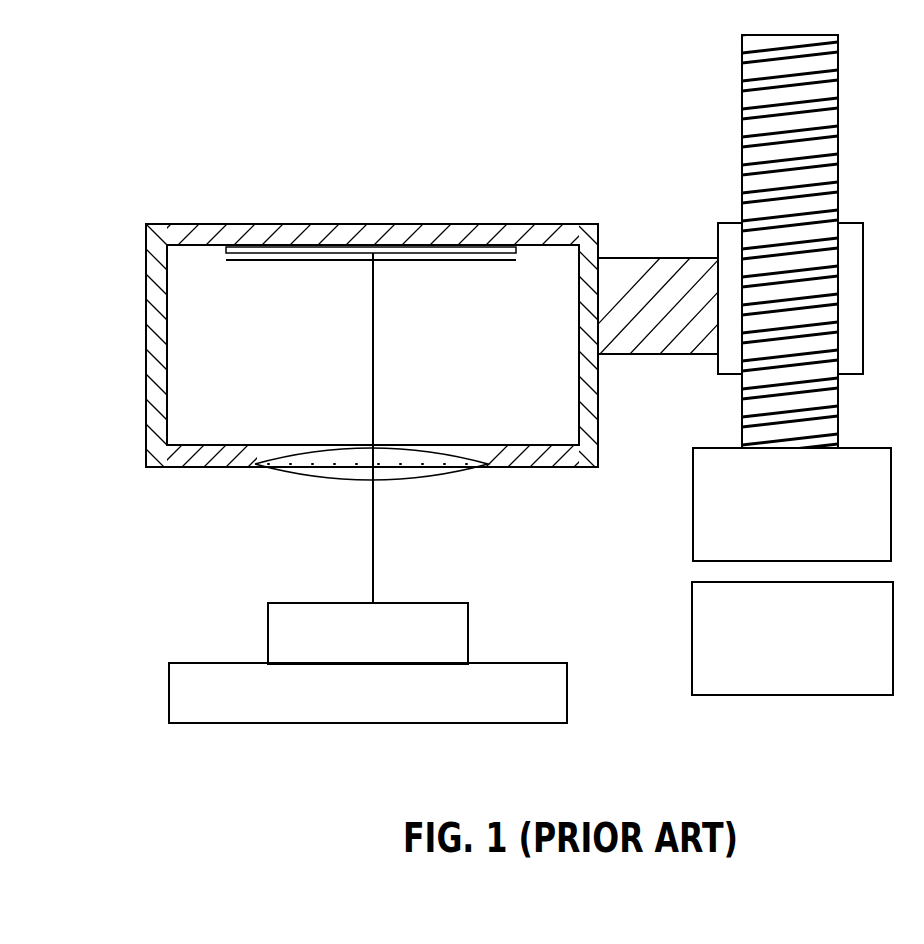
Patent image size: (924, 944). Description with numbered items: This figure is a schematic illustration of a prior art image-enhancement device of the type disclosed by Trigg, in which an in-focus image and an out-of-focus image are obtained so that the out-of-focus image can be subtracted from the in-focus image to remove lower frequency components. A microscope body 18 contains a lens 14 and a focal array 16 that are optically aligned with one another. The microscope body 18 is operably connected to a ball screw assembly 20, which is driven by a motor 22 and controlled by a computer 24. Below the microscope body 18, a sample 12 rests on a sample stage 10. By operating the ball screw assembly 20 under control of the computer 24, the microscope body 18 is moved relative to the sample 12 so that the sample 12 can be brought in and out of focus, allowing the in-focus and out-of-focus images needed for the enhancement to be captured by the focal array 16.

The sample stage 10 is at (567, 676).
The sample 12 is at (468, 630).
The lens 14 is at (298, 476).
The focal array 16 is at (273, 268).
The microscope body 18 is at (146, 341).
The ball screw assembly 20 is at (739, 101).
The motor 22 is at (792, 504).
The computer 24 is at (792, 638).